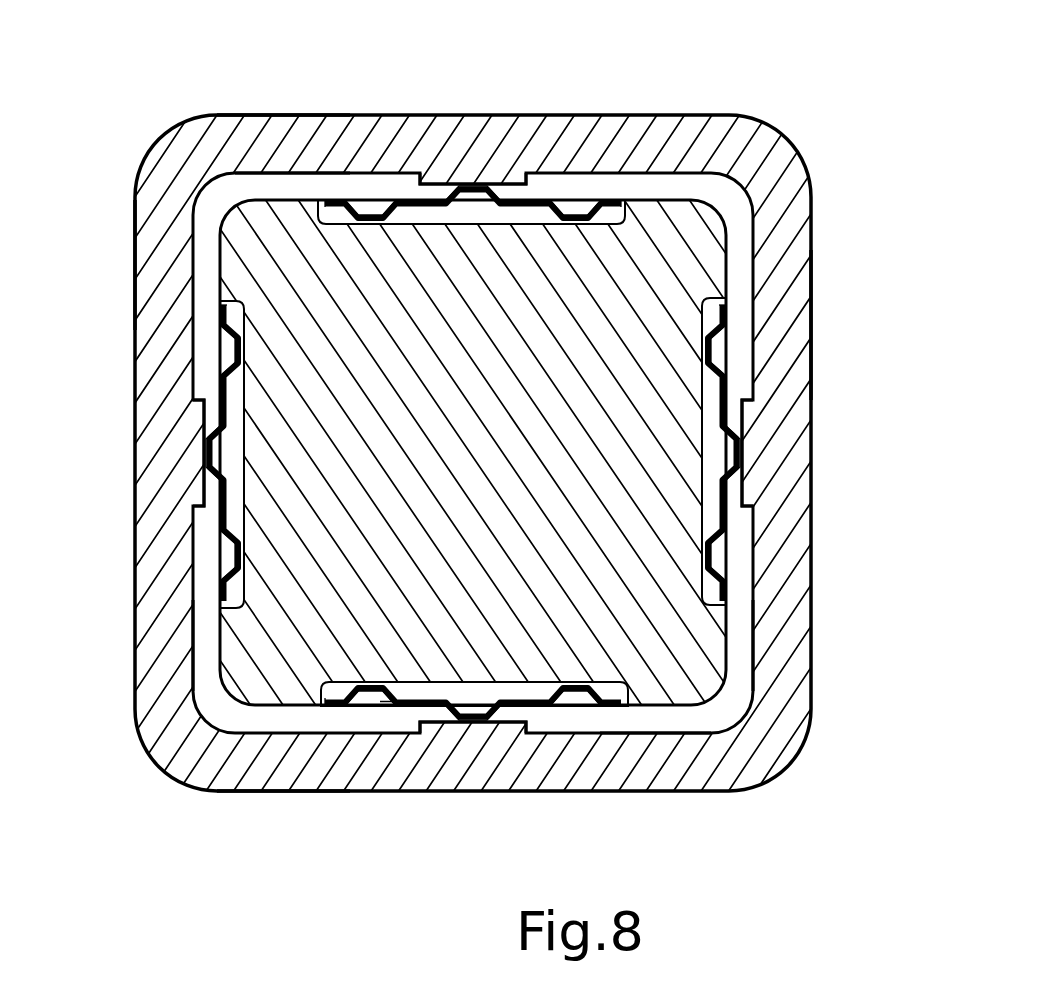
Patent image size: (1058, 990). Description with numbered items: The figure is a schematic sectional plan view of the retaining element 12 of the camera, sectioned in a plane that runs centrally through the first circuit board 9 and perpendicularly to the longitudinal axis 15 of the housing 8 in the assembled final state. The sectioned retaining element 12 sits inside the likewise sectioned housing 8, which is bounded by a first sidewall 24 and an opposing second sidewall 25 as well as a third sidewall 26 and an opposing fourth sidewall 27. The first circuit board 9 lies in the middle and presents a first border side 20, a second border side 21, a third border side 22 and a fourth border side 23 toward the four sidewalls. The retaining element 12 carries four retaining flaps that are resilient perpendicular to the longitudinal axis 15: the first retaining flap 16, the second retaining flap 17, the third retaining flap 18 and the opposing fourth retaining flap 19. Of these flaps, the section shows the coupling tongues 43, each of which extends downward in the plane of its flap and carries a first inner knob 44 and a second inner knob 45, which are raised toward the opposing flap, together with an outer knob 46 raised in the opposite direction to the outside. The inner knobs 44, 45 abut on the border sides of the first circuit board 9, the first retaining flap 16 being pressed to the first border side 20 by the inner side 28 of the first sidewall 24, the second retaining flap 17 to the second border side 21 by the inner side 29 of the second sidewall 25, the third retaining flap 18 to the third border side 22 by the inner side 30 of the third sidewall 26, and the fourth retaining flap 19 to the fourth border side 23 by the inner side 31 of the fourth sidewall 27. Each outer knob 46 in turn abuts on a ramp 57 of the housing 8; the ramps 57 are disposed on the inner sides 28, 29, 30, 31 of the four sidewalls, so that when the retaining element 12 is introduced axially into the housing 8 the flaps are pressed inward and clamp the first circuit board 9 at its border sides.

The housing 8 is at (761, 113).
The first circuit board 9 is at (714, 240).
The retaining element 12 is at (337, 198).
The longitudinal axis 15 is at (473, 452).
The first retaining flap 16 is at (728, 410).
The second retaining flap 17 is at (217, 412).
The third retaining flap 18 is at (393, 708).
The fourth retaining flap 19 is at (444, 197).
The first border side 20 is at (712, 308).
The second border side 21 is at (238, 315).
The third border side 22 is at (335, 700).
The fourth border side 23 is at (614, 205).
The first sidewall 24 is at (783, 298).
The second sidewall 25 is at (146, 242).
The third sidewall 26 is at (258, 790).
The fourth sidewall 27 is at (277, 133).
The inner side of the first sidewall 28 is at (748, 672).
The inner side of the second sidewall 29 is at (200, 658).
The inner side of the third sidewall 30 is at (665, 723).
The inner side of the fourth sidewall 31 is at (272, 180).
The coupling tongue 43 is at (413, 198).
The first inner knob 44 is at (243, 345).
The second inner knob 45 is at (367, 226).
The outer knob 46 is at (482, 187).
The ramp 57 is at (530, 178).